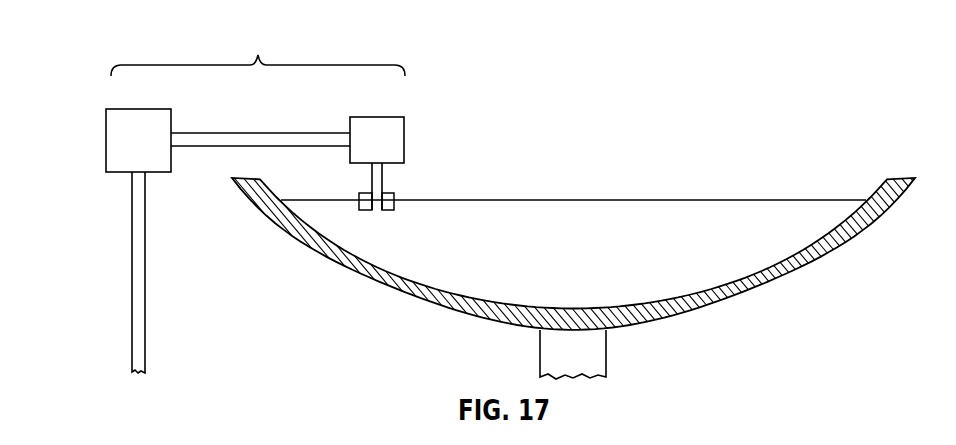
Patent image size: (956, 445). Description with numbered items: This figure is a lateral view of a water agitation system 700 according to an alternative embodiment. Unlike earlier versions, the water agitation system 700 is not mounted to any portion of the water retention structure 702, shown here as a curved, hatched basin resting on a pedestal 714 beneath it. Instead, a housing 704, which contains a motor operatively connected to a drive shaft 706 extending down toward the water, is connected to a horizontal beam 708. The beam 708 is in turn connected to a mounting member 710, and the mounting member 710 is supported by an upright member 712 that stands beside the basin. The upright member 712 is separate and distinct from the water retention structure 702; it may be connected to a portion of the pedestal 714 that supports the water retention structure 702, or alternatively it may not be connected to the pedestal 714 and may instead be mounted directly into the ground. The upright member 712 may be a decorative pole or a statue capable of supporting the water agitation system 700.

The water agitation system 700 is at (258, 52).
The water retention structure 702 is at (257, 210).
The housing 704 is at (405, 138).
The drive shaft 706 is at (383, 185).
The beam 708 is at (258, 133).
The mounting member 710 is at (106, 142).
The upright member 712 is at (132, 272).
The pedestal 714 is at (606, 348).